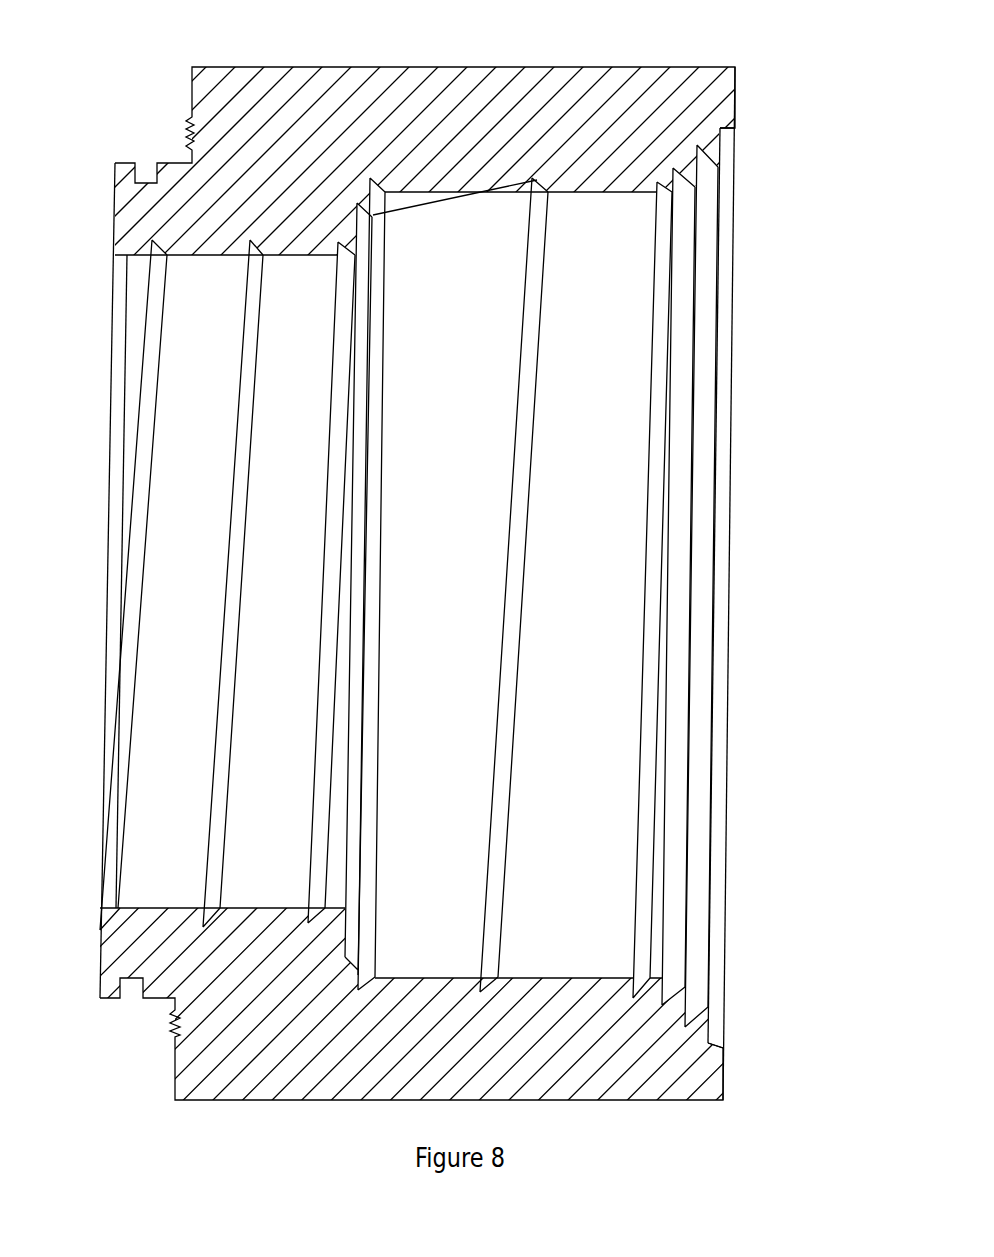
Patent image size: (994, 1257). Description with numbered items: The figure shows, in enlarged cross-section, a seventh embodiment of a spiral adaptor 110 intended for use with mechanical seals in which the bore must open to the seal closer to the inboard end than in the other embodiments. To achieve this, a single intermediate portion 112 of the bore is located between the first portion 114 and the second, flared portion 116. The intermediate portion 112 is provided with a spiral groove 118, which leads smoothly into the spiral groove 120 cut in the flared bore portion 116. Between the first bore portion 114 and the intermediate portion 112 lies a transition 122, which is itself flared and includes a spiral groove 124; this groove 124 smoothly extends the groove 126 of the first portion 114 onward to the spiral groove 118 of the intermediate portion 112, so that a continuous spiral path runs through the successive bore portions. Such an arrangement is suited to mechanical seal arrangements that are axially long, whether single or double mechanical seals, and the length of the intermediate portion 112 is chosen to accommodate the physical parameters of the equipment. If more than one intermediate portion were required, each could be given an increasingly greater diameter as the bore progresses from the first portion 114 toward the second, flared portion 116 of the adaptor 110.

The spiral adaptor 110 is at (540, 50).
The intermediate portion 112 is at (470, 495).
The first portion 114 is at (212, 253).
The second, flared portion 116 is at (697, 145).
The spiral groove 118 is at (505, 743).
The spiral groove 120 is at (673, 807).
The transition 122 is at (373, 215).
The spiral groove 124 is at (352, 928).
The groove 126 is at (207, 856).